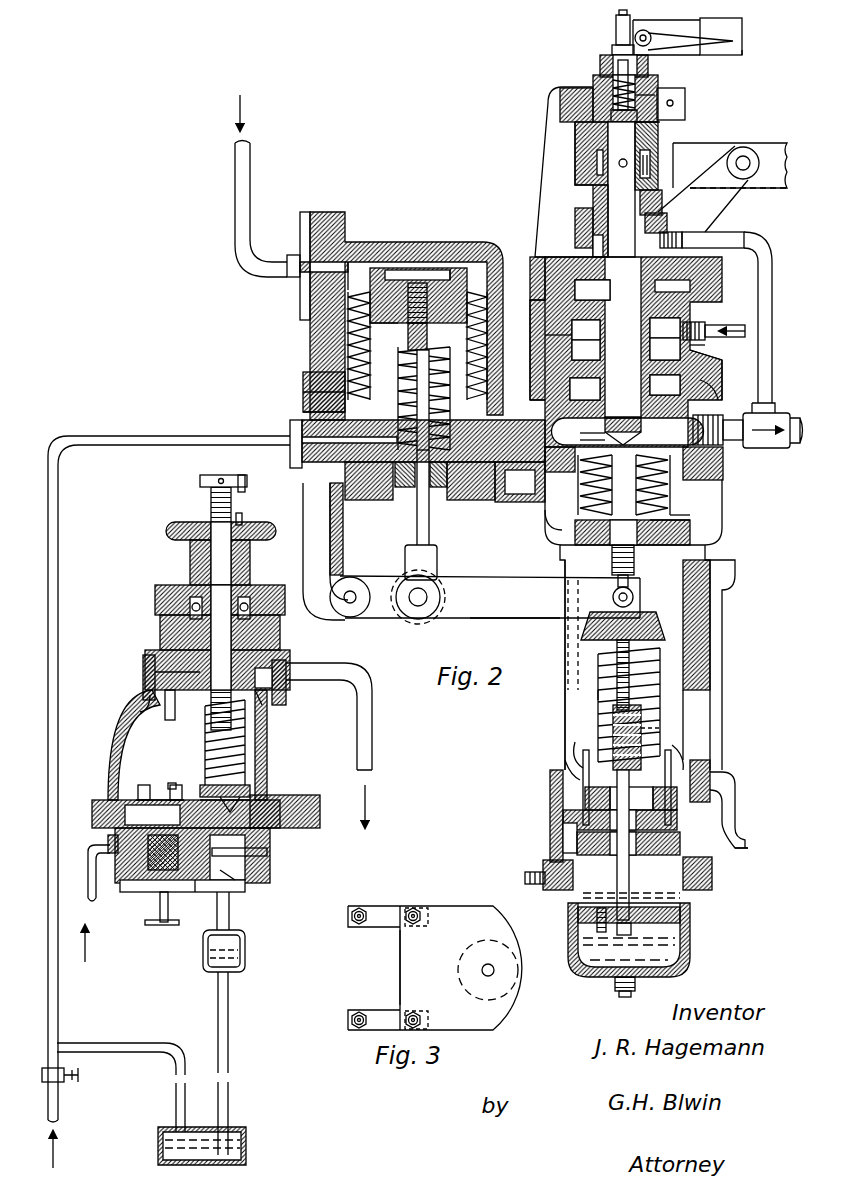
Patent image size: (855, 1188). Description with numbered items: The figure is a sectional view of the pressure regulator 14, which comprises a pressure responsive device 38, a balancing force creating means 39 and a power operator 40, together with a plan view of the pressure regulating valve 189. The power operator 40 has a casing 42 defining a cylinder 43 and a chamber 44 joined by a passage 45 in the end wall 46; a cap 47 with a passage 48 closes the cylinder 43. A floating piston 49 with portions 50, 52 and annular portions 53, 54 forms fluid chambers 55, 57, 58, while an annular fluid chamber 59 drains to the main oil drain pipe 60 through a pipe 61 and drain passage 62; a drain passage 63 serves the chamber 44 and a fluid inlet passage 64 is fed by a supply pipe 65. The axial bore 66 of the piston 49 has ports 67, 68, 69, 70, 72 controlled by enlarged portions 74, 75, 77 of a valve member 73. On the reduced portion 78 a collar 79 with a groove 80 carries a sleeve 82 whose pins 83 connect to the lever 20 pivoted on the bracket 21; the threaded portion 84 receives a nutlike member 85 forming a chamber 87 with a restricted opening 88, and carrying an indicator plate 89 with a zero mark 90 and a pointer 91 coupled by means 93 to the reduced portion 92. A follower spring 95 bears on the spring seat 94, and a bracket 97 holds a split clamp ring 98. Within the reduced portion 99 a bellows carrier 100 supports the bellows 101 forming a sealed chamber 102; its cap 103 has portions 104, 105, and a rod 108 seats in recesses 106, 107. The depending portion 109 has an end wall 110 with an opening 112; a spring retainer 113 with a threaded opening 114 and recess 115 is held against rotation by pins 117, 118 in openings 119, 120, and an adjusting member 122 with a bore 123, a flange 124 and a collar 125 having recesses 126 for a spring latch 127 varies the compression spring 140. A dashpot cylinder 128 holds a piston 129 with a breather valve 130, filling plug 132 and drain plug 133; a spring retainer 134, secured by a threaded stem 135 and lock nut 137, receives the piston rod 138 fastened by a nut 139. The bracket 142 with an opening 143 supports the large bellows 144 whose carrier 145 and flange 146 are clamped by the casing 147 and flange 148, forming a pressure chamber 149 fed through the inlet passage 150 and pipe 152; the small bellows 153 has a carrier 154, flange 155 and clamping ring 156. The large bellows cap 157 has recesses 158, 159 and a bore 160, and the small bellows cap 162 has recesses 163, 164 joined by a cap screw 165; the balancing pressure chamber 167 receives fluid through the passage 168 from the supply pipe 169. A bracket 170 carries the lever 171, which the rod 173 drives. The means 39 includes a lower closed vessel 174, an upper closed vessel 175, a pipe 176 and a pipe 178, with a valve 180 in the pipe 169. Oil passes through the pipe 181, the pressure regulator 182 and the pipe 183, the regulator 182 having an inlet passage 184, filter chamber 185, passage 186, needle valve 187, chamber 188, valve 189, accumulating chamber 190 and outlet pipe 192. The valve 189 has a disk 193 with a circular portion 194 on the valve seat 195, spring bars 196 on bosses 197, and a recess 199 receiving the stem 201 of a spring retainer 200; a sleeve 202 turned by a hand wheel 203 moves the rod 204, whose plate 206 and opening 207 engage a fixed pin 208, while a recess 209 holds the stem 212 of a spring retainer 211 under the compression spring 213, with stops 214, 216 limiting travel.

In FIG. 2, the pressure regulator 14 is at (485, 607).
In FIG. 2, the lever 20 is at (770, 144).
In FIG. 2, the bracket 21 is at (728, 198).
In FIG. 2, the pressure responsive device 38 is at (401, 304).
In FIG. 2, the balancing force creating means 39 is at (160, 939).
In FIG. 2, the power operator 40 is at (661, 625).
In FIG. 2, the casing 42 is at (555, 320).
In FIG. 2, the cylinder 43 is at (558, 336).
In FIG. 2, the chamber 44 is at (712, 518).
In FIG. 2, the passage 45 is at (641, 425).
In FIG. 2, the end wall 46 is at (560, 403).
In FIG. 2, the cylinder head or cap 47 is at (722, 262).
In FIG. 2, the passage 48 is at (580, 256).
In FIG. 2, the floating piston 49 is at (586, 350).
In FIG. 2, the axially disposed portion 50 is at (590, 240).
In FIG. 2, the axially disposed portion 52 is at (585, 389).
In FIG. 2, the annular portion 53 is at (700, 318).
In FIG. 2, the annular portion 54 is at (560, 377).
In FIG. 2, the annular fluid chamber 55 is at (690, 285).
In FIG. 2, the annular fluid chamber 57 is at (665, 328).
In FIG. 2, the annular fluid chamber 58 is at (698, 382).
In FIG. 2, the annular fluid chamber 59 is at (585, 228).
In FIG. 2, the main oil drain pipe 60 is at (790, 414).
In FIG. 2, the pipe 61 is at (772, 300).
In FIG. 2, the drain passage 62 is at (685, 233).
In FIG. 2, the drain passage 63 is at (700, 397).
In FIG. 2, the fluid inlet passage 64 is at (700, 345).
In FIG. 2, the supply pipe 65 is at (735, 338).
In FIG. 2, the axial bore 66 is at (593, 200).
In FIG. 2, the port 67 is at (660, 225).
In FIG. 2, the port 68 is at (690, 290).
In FIG. 2, the port 69 is at (665, 349).
In FIG. 2, the port 70 is at (665, 387).
In FIG. 2, the port 72 is at (641, 438).
In FIG. 2, the valve member 73 is at (592, 290).
In FIG. 2, the enlarged portion 74 is at (640, 200).
In FIG. 2, the enlarged portion 75 is at (586, 330).
In FIG. 2, the enlarged portion 77 is at (592, 426).
In FIG. 2, the reduced portion 78 is at (650, 153).
In FIG. 2, the annular collar 79 is at (595, 148).
In FIG. 2, the annular external groove 80 is at (650, 165).
In FIG. 2, the sleeve 82 is at (650, 176).
In FIG. 2, the pins 83 is at (597, 163).
In FIG. 2, the externally threaded portion 84 is at (660, 122).
In FIG. 2, the nutlike member 85 is at (658, 136).
In FIG. 2, the chamber 87 is at (593, 88).
In FIG. 2, the restricted opening 88 is at (600, 67).
In FIG. 2, the indicator plate 89 is at (742, 55).
In FIG. 2, the zero position mark 90 is at (742, 27).
In FIG. 2, the pointer 91 is at (700, 55).
In FIG. 2, the reduced portion 92 is at (612, 50).
In FIG. 2, the pivotal connecting means 93 is at (616, 28).
In FIG. 2, the spring seat 94 is at (650, 94).
In FIG. 2, the follower spring 95 is at (638, 82).
In FIG. 2, the bracket 97 is at (548, 105).
In FIG. 2, the split clamp ring 98 is at (685, 97).
In FIG. 2, the annular portion of reduced diameter 99 is at (700, 450).
In FIG. 2, the bellows carrier 100 is at (710, 470).
In FIG. 2, the bellows 101 is at (548, 532).
In FIG. 2, the sealed fluid chamber 102 is at (662, 493).
In FIG. 2, the bellows cap 103 is at (660, 540).
In FIG. 2, the axially extending portion 104 is at (632, 538).
In FIG. 2, the axially extending portion 105 is at (614, 565).
In FIG. 2, the recess 106 is at (668, 512).
In FIG. 2, the recess 107 is at (605, 438).
In FIG. 2, the rod 108 is at (585, 495).
In FIG. 2, the depending portion 109 is at (690, 636).
In FIG. 2, the end wall 110 is at (563, 812).
In FIG. 2, the opening 112 is at (617, 850).
In FIG. 2, the spring retainer 113 is at (585, 795).
In FIG. 2, the internally threaded opening 114 is at (574, 752).
In FIG. 2, the recess 115 is at (550, 786).
In FIG. 2, the pin 117 is at (672, 756).
In FIG. 2, the pin 118 is at (584, 752).
In FIG. 2, the opening 119 is at (690, 752).
In FIG. 2, the opening 120 is at (565, 763).
In FIG. 2, the adjusting member 122 is at (641, 712).
In FIG. 2, the axial bore 123 is at (660, 728).
In FIG. 2, the collar or flange 124 is at (727, 797).
In FIG. 2, the annular collar 125 is at (697, 865).
In FIG. 2, the recesses 126 is at (577, 840).
In FIG. 2, the spring latch 127 is at (740, 849).
In FIG. 2, the cylinder 128 is at (690, 952).
In FIG. 2, the piston 129 is at (690, 914).
In FIG. 2, the breather valve 130 is at (597, 920).
In FIG. 2, the filling plug 132 is at (548, 872).
In FIG. 2, the drain plug 133 is at (615, 988).
In FIG. 2, the spring retainer 134 is at (650, 625).
In FIG. 2, the threaded stem 135 is at (613, 592).
In FIG. 2, the lock nut 137 is at (630, 578).
In FIG. 2, the piston rod 138 is at (630, 675).
In FIG. 2, the nut 139 is at (631, 929).
In FIG. 2, the compression spring 140 is at (598, 694).
In FIG. 2, the bracket 142 is at (520, 482).
In FIG. 2, the opening 143 is at (440, 487).
In FIG. 2, the large bellows 144 is at (452, 320).
In FIG. 2, the annular carrier 145 is at (303, 392).
In FIG. 2, the flange 146 is at (303, 410).
In FIG. 2, the casing 147 is at (348, 363).
In FIG. 2, the flange 148 is at (303, 378).
In FIG. 2, the pressure chamber 149 is at (358, 268).
In FIG. 2, the fluid inlet passage 150 is at (310, 275).
In FIG. 2, the pipe 152 is at (250, 178).
In FIG. 2, the small bellows 153 is at (452, 375).
In FIG. 2, the annular carrier 154 is at (405, 487).
In FIG. 2, the flange 155 is at (385, 500).
In FIG. 2, the clamping ring 156 is at (480, 500).
In FIG. 2, the bellows cap 157 is at (383, 268).
In FIG. 2, the recess 158 is at (400, 270).
In FIG. 2, the recess 159 is at (452, 270).
In FIG. 2, the axial bore 160 is at (433, 268).
In FIG. 2, the bellows cap 162 is at (487, 326).
In FIG. 2, the recess 163 is at (350, 333).
In FIG. 2, the recess 164 is at (487, 343).
In FIG. 2, the cap screw 165 is at (420, 270).
In FIG. 2, the balancing pressure chamber 167 is at (350, 348).
In FIG. 2, the passage 168 is at (302, 452).
In FIG. 2, the fluid supply pipe 169 is at (90, 437).
In FIG. 2, the bracket 170 is at (303, 516).
In FIG. 2, the lever 171 is at (478, 619).
In FIG. 2, the rod 173 is at (429, 533).
In FIG. 2, the lower closed vessel 174 is at (246, 1145).
In FIG. 2, the upper closed vessel 175 is at (245, 950).
In FIG. 2, the pipe 176 is at (228, 1030).
In FIG. 2, the pipe 178 is at (127, 1047).
In FIG. 2, the valve 180 is at (48, 1075).
In FIG. 2, the pipe 181 is at (92, 900).
In FIG. 2, the pressure regulator 182 is at (212, 860).
In FIG. 2, the pipe 183 is at (229, 913).
In FIG. 2, the fluid inlet passage 184 is at (108, 840).
In FIG. 2, the filter chamber 185 is at (155, 860).
In FIG. 2, the passage 186 is at (196, 892).
In FIG. 2, the needle valve 187 is at (240, 868).
In FIG. 2, the chamber 188 is at (238, 880).
In FIG. 2, the pressure regulating valve 189 is at (245, 800).
In FIG. 3, the pressure regulating valve 189 is at (435, 954).
In FIG. 2, the accumulating chamber 190 is at (118, 752).
In FIG. 2, the pipe 192 is at (372, 735).
In FIG. 3, the valve plate or disk 193 is at (400, 975).
In FIG. 3, the thickened circular portion 194 is at (463, 985).
In FIG. 2, the valve seat 195 is at (285, 811).
In FIG. 2, the spring bars 196 is at (162, 795).
In FIG. 3, the spring bars 196 is at (375, 922).
In FIG. 2, the bosses 197 is at (120, 805).
In FIG. 2, the recess 199 is at (242, 797).
In FIG. 2, the spring retainer 200 is at (205, 785).
In FIG. 2, the stem 201 is at (176, 790).
In FIG. 2, the sleeve 202 is at (200, 568).
In FIG. 2, the hand wheel 203 is at (176, 522).
In FIG. 2, the rod 204 is at (219, 475).
In FIG. 2, the plate 206 is at (178, 690).
In FIG. 2, the opening 207 is at (155, 674).
In FIG. 2, the fixed pin 208 is at (150, 692).
In FIG. 2, the recess 209 is at (270, 690).
In FIG. 2, the spring retainer 211 is at (262, 708).
In FIG. 2, the stem 212 is at (286, 678).
In FIG. 2, the compression spring 213 is at (206, 733).
In FIG. 2, the stop 214 is at (155, 663).
In FIG. 2, the stop 216 is at (242, 492).